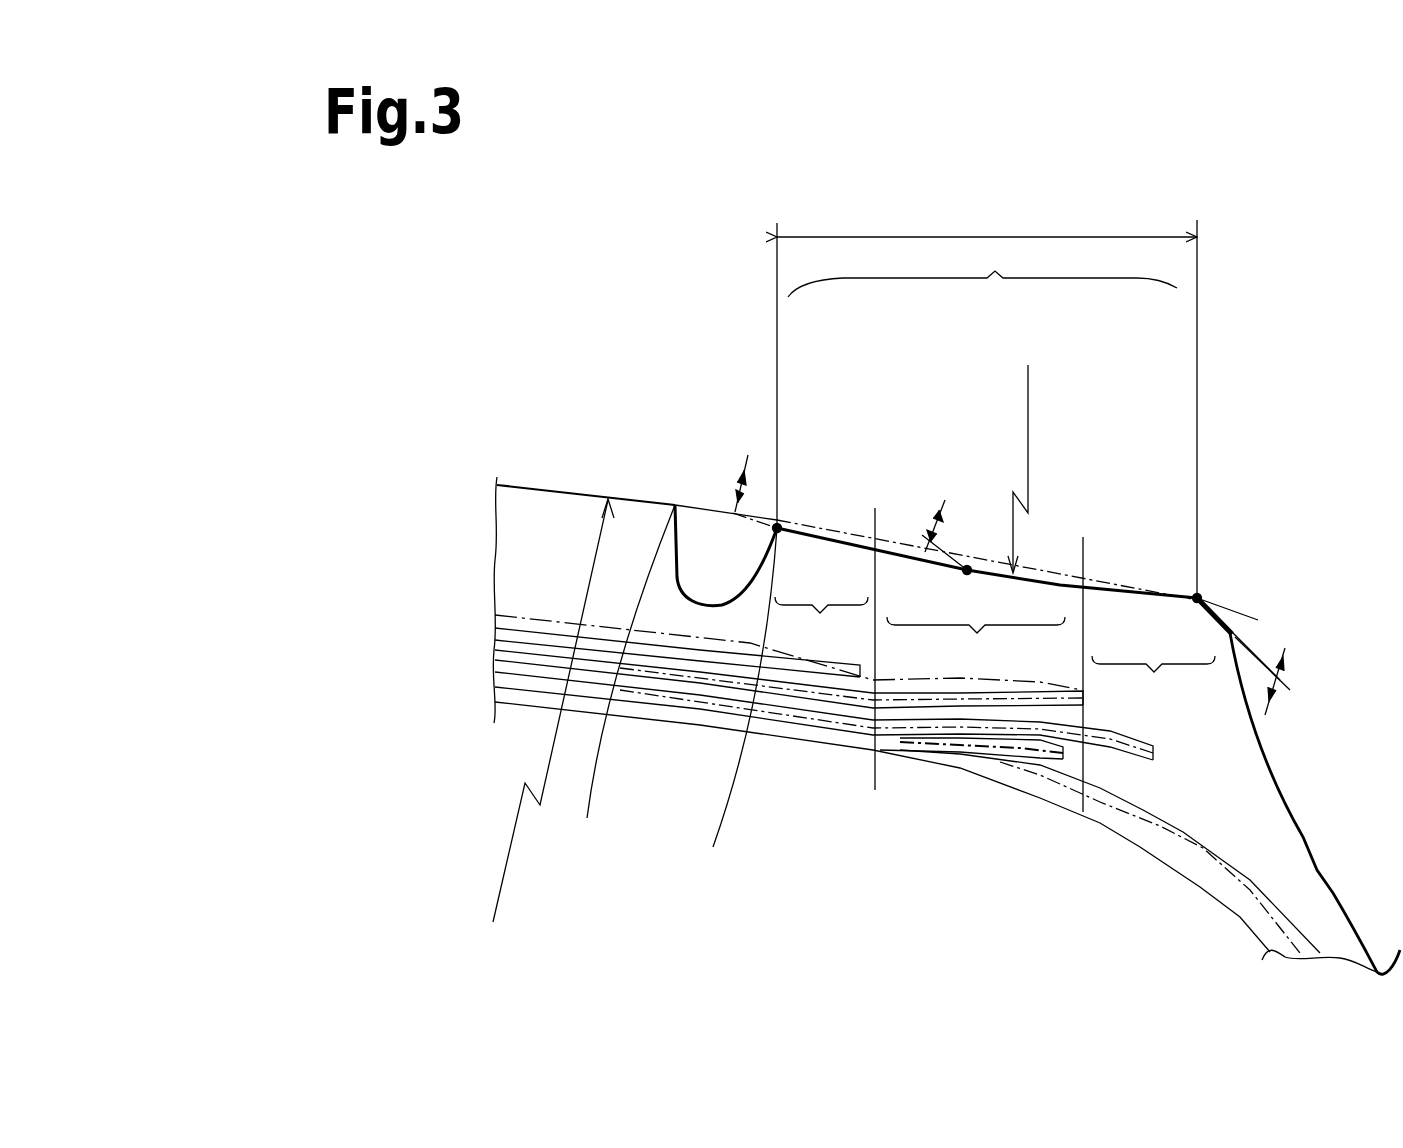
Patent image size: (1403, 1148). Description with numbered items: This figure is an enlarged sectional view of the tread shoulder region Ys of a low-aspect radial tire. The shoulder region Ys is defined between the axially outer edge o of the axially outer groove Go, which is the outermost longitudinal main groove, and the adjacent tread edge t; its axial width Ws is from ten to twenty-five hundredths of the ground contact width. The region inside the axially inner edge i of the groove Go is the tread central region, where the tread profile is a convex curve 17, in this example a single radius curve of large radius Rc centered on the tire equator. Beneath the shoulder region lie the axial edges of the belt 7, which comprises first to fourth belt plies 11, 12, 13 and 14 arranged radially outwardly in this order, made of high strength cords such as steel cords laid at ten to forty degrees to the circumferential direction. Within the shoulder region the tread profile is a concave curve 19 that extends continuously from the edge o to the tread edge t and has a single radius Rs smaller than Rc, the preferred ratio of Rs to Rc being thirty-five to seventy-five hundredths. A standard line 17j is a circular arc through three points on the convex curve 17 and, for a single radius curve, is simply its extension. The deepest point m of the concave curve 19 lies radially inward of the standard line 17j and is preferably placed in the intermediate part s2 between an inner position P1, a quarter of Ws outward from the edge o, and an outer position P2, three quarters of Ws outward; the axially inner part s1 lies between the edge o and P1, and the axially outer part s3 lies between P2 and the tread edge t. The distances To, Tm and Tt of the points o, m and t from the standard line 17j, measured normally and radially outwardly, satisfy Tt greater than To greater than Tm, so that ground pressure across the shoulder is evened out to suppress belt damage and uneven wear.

The convex curve 17 is at (540, 489).
The standard line 17j is at (1050, 567).
The concave curve 19 is at (1098, 582).
The belt 7 is at (762, 752).
The fourth belt ply 14 is at (495, 620).
The third belt ply 13 is at (495, 637).
The second belt ply 12 is at (495, 648).
The first belt ply 11 is at (495, 665).
The axially outer groove Go is at (713, 553).
The distance To is at (738, 492).
The distance Tm is at (930, 547).
The distance Tt is at (1290, 690).
The deepest point m is at (967, 570).
The tread edge t is at (1197, 598).
The axial width Ws is at (938, 237).
The tread shoulder region Ys is at (982, 266).
The radius Rs is at (1028, 448).
The radius Rc is at (507, 863).
The axially inner part s1 is at (821, 625).
The intermediate part s2 is at (976, 646).
The axially outer part s3 is at (1153, 684).
The inner position P1 is at (875, 760).
The outer position P2 is at (1083, 785).
The axially inner edge i is at (629, 683).
The axially outer edge o is at (739, 704).